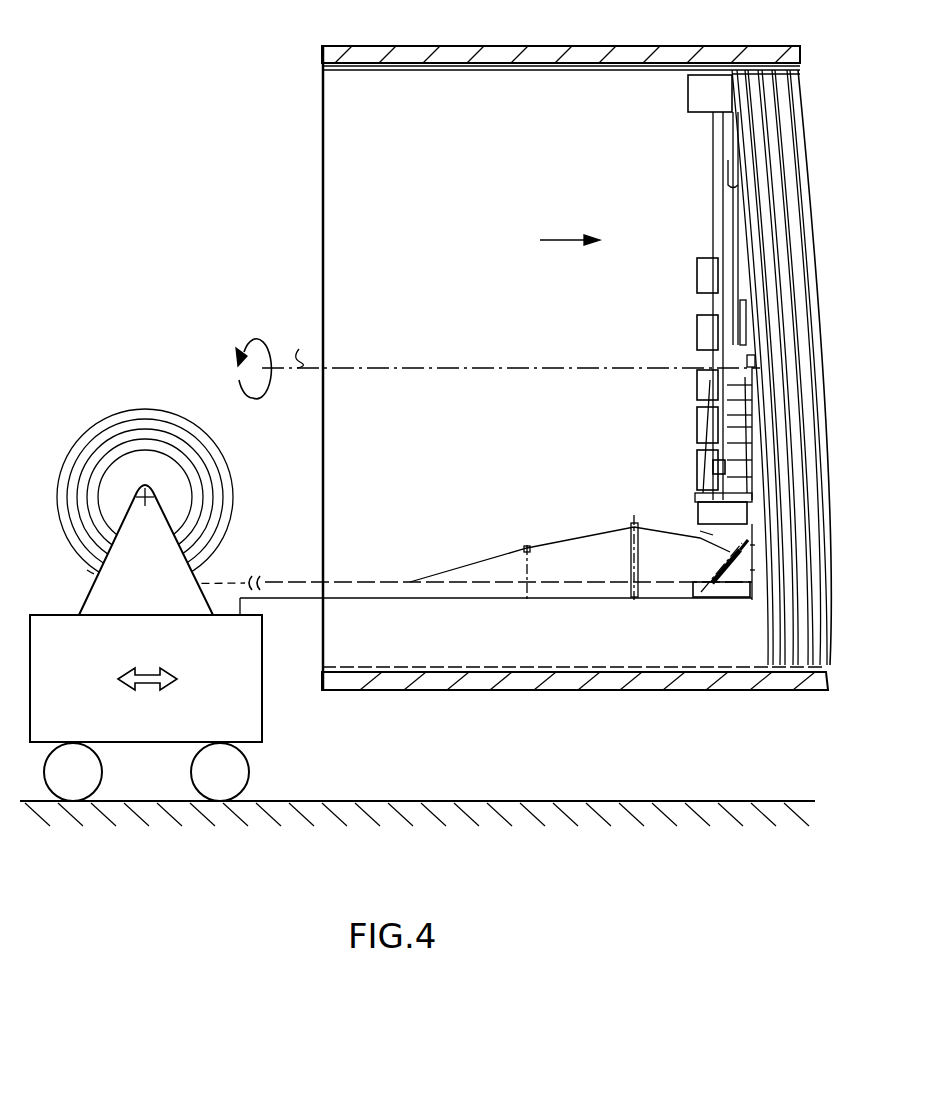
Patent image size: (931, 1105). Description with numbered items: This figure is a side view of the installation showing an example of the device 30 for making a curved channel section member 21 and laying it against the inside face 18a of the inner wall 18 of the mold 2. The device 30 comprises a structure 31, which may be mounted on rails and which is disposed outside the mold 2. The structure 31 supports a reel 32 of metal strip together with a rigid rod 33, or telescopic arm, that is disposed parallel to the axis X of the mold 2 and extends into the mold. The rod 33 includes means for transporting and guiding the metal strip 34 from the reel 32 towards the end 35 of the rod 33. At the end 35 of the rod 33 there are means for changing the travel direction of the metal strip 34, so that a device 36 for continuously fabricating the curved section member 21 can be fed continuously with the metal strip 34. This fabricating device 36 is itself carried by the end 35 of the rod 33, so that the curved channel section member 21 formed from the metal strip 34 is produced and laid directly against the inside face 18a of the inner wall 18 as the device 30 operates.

The mold 2 is at (397, 55).
The inner wall 18 is at (538, 68).
The inside face 18a is at (561, 96).
The curved channel section member 21 is at (752, 70).
The device 30 is at (417, 527).
The structure 31 is at (262, 722).
The reel 32 is at (97, 592).
The rigid rod 33 is at (380, 600).
The metal strip 34 is at (383, 582).
The end of the rod 35 is at (722, 600).
The device for continuously fabricating the curved section member 36 is at (650, 425).